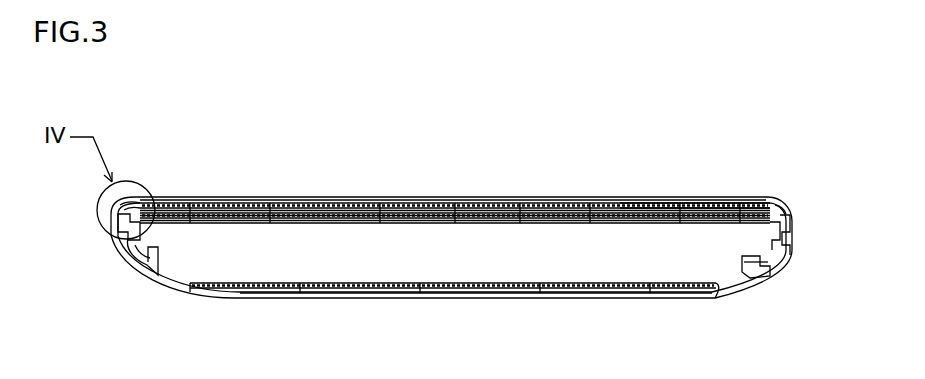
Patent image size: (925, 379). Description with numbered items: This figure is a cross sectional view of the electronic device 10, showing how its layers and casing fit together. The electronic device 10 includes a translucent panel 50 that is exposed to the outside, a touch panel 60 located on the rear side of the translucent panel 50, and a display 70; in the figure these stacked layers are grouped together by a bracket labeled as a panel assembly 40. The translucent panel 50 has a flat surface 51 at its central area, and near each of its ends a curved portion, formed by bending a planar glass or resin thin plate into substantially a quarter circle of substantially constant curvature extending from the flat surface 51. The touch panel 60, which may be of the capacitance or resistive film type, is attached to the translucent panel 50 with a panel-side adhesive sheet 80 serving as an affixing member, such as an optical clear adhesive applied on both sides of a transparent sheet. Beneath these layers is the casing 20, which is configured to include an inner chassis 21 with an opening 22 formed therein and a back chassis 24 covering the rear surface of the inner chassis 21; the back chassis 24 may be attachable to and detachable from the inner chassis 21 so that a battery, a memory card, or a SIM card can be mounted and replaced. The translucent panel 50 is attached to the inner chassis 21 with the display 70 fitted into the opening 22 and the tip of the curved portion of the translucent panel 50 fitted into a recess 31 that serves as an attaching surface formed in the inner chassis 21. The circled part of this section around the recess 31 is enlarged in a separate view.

The electronic device 10 is at (742, 131).
The casing 20 is at (802, 285).
The inner chassis 21 is at (766, 272).
The opening 22 is at (767, 252).
The back chassis 24 is at (745, 289).
The recess 31 is at (98, 212).
The display module 40 is at (628, 112).
The translucent panel 50 is at (492, 201).
The flat surface 51 is at (355, 200).
The touch panel 60 is at (538, 207).
The display 70 is at (588, 210).
The panel-side adhesive sheet 80 is at (688, 205).